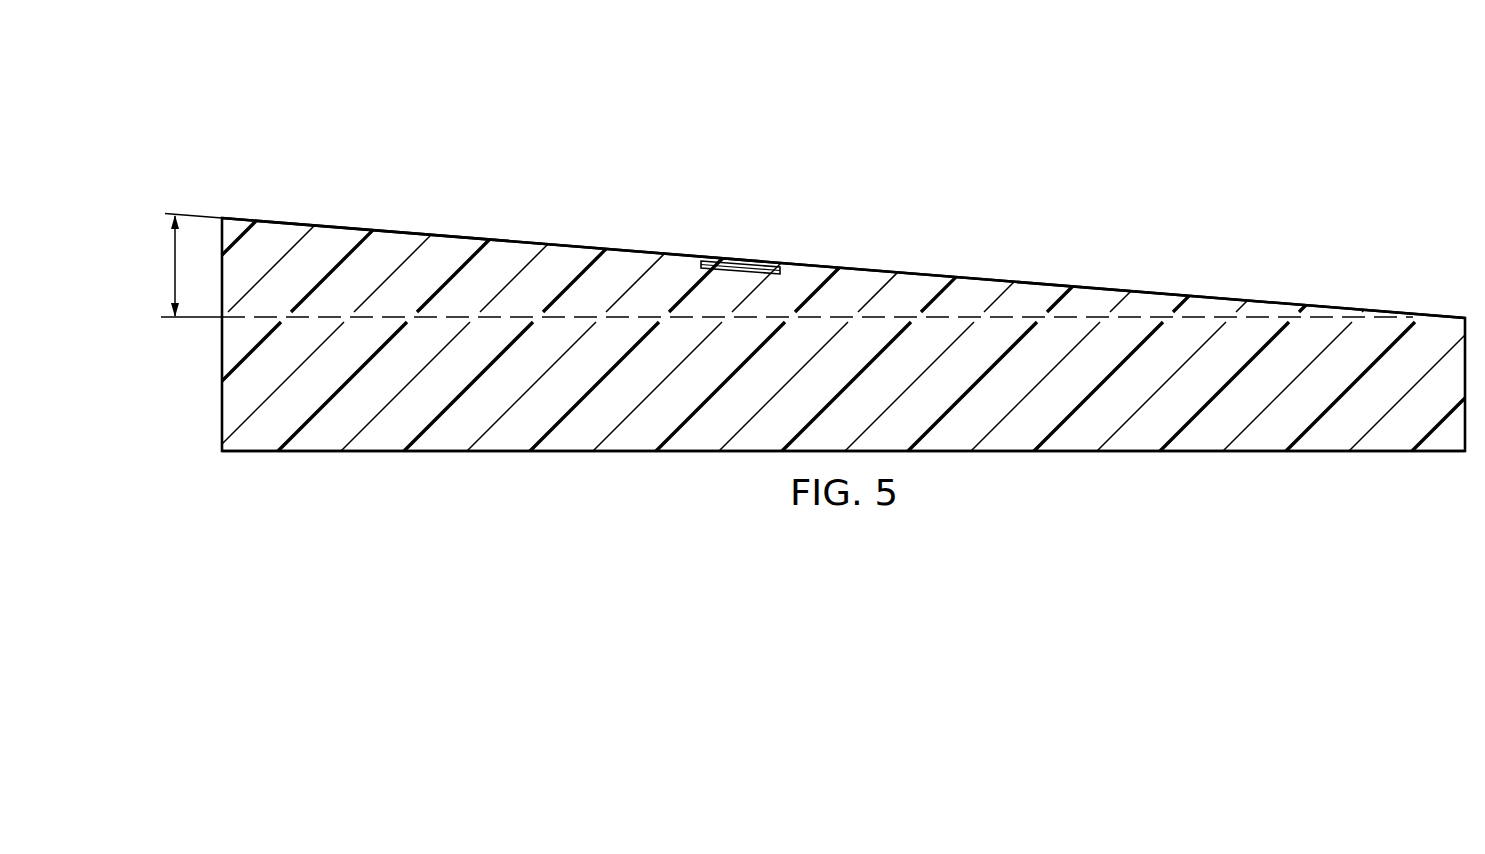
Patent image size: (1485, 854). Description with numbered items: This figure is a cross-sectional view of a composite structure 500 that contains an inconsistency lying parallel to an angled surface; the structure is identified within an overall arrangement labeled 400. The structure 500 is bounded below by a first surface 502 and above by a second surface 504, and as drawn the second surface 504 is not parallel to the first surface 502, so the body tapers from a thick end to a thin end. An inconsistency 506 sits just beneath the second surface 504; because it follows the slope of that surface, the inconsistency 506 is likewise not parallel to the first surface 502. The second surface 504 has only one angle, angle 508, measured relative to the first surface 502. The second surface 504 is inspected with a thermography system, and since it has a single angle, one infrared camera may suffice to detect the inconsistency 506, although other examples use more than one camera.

The wedge-shaped structure 400 is at (428, 74).
The structure 500 is at (338, 203).
The first surface 502 is at (570, 452).
The second surface 504 is at (983, 278).
The inconsistency 506 is at (741, 265).
The angle 508 is at (173, 265).